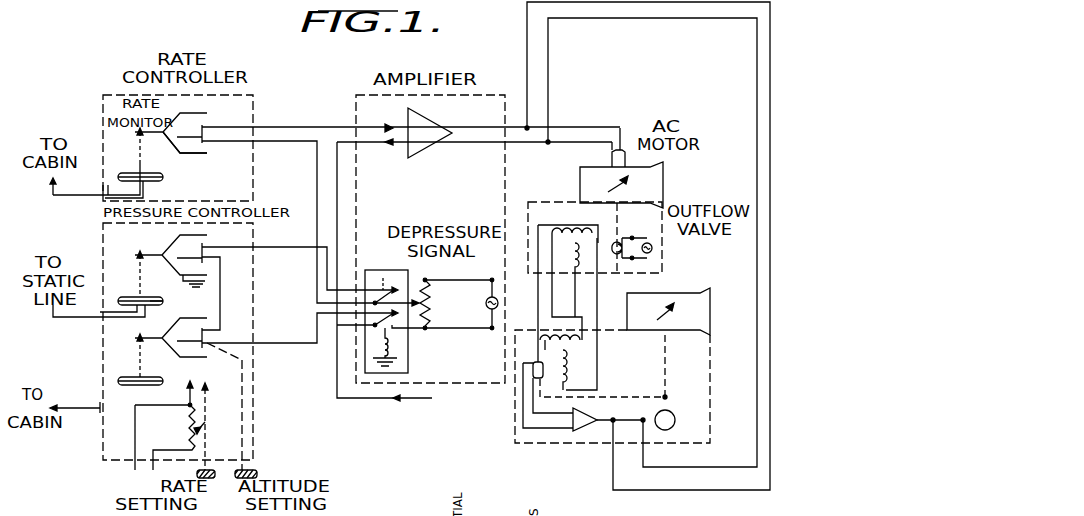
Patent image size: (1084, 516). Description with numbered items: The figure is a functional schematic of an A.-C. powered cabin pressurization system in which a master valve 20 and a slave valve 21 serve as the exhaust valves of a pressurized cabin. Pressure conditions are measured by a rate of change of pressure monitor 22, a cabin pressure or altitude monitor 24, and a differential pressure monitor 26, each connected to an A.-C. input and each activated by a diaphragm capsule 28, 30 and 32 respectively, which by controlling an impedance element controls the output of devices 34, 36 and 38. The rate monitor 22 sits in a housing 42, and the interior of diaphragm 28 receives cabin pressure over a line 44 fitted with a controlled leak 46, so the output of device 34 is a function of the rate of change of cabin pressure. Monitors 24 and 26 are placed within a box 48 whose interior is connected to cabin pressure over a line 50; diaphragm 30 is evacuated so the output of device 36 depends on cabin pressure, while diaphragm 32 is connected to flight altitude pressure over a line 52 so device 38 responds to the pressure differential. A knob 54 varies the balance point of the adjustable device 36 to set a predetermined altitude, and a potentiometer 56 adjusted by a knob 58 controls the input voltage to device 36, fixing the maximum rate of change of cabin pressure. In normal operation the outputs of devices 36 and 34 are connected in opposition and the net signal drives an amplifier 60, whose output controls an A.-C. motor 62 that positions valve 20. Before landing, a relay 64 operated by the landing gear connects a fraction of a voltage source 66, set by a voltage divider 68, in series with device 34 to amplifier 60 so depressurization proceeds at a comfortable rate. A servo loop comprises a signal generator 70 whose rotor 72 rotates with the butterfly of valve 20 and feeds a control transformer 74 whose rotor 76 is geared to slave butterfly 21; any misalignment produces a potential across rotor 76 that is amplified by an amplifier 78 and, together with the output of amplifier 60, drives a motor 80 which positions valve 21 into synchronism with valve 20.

The master valve 20 is at (621, 185).
The slave valve 21 is at (668, 311).
The rate of change of pressure monitor 22 is at (197, 196).
The cabin pressure monitor 24 is at (170, 373).
The differential pressure monitor 26 is at (170, 285).
The diaphragm capsule 28 is at (143, 171).
The diaphragm capsule 30 is at (133, 387).
The diaphragm capsule 32 is at (121, 297).
The device 34 is at (193, 155).
The device 36 is at (218, 406).
The device 38 is at (163, 300).
The housing 42 is at (257, 178).
The line 44 is at (100, 198).
The controlled leak 46 is at (114, 170).
The box 48 is at (257, 403).
The line 50 is at (100, 412).
The line 52 is at (100, 320).
The knob 54 is at (265, 465).
The potentiometer 56 is at (183, 420).
The knob 58 is at (197, 473).
The amplifier 60 is at (427, 147).
The A.-C. motor 62 is at (610, 158).
The relay 64 is at (410, 362).
The voltage source 66 is at (486, 303).
The voltage divider 68 is at (433, 293).
The signal generator 70 is at (595, 225).
The rotor 72 is at (611, 248).
The control transformer 74 is at (590, 385).
The rotor 76 is at (531, 371).
The amplifier 78 is at (576, 436).
The motor 80 is at (678, 406).